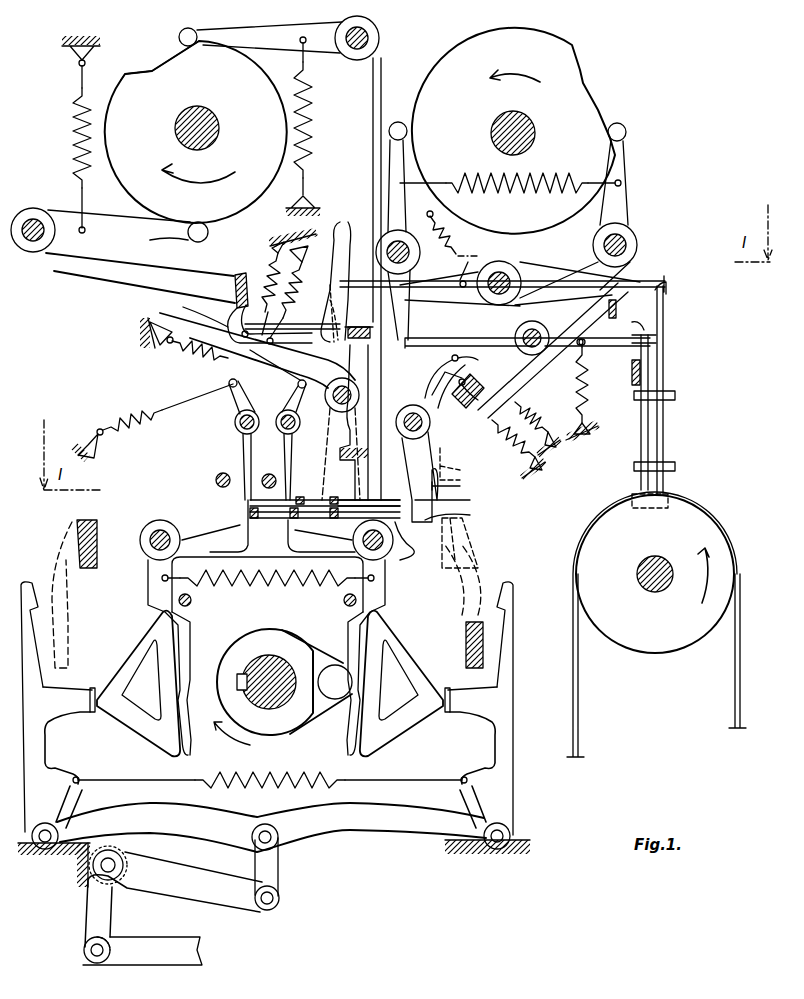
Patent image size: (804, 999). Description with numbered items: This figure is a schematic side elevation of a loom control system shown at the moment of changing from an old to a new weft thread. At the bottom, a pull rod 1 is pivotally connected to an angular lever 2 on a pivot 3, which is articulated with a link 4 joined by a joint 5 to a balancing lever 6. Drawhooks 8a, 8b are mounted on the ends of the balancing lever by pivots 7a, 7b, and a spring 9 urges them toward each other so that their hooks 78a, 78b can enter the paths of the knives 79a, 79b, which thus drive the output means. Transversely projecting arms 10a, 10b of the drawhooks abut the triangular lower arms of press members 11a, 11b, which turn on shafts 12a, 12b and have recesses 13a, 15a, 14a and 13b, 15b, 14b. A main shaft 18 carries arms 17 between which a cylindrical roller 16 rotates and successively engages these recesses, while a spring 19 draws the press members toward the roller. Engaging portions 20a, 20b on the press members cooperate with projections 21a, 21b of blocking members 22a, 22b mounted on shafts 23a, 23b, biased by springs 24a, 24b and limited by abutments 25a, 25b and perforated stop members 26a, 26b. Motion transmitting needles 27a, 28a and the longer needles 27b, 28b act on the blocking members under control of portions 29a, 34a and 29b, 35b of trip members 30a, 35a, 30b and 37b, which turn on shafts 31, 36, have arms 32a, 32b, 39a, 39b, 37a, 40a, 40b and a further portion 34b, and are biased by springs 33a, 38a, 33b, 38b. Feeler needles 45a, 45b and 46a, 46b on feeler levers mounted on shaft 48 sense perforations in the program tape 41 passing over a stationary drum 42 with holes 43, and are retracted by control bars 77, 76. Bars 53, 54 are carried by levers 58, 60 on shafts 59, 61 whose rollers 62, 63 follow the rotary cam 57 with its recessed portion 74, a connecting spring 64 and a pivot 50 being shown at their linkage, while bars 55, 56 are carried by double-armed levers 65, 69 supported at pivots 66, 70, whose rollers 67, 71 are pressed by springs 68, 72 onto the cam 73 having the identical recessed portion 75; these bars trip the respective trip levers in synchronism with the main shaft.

The pull rod 1 is at (172, 961).
The angular lever 2 is at (180, 895).
The pivot 3 is at (120, 858).
The link 4 is at (270, 875).
The joint 5 is at (252, 848).
The balancing lever 6 is at (346, 829).
The pivot 7a is at (506, 832).
The pivot 7b is at (60, 820).
The drawhook 8a is at (502, 762).
The drawhook 8b is at (48, 740).
The spring 9 is at (254, 778).
The transversely projecting arm 10a is at (482, 708).
The transversely projecting arm 10b is at (78, 705).
The press member 11a is at (395, 708).
The press member 11b is at (130, 715).
The shaft 12a is at (380, 558).
The shaft 12b is at (150, 550).
The recess 13a is at (354, 645).
The recess 13b is at (183, 640).
The recess 14a is at (352, 726).
The recess 14b is at (182, 720).
The recess 15a is at (351, 697).
The recess 15b is at (186, 678).
The cylindrical roller 16 is at (345, 691).
The arms 17 is at (284, 725).
The main shaft 18 is at (280, 693).
The spring 19 is at (268, 584).
The engaging portion 20a is at (288, 540).
The engaging portion 20b is at (248, 526).
The projection 21a is at (296, 520).
The projection 21b is at (250, 514).
The blocking member 22a is at (296, 388).
The blocking member 22b is at (233, 390).
The shaft 23a is at (300, 420).
The shaft 23b is at (236, 426).
The spring 24a is at (194, 354).
The spring 24b is at (151, 423).
The abutment 25a is at (266, 468).
The abutment 25b is at (218, 469).
The perforated stop member 26a is at (292, 470).
The perforated stop member 26b is at (243, 470).
The first motion transmitting needle 27a is at (408, 540).
The motion transmitting needle 27b is at (250, 510).
The second motion transmitting needle 28a is at (318, 500).
The motion transmitting needle 28b is at (250, 500).
The portion of first trip member 29a is at (472, 508).
The lower portion of trip member 29b is at (470, 515).
The first trip member 30a is at (462, 488).
The trip member 30b is at (462, 468).
The shaft 31 is at (430, 430).
The arm of trip lever 32a is at (470, 385).
The lever 32b is at (480, 372).
The spring 33a is at (520, 470).
The spring 33b is at (556, 448).
The portion of second trip member 34a is at (356, 456).
The slider bar 34b is at (358, 500).
The second trip member 35a is at (228, 288).
The trip member 35b is at (242, 331).
The shaft 36 is at (357, 402).
The arm of trip member 37a is at (284, 342).
The trip member arm 37b is at (180, 318).
The spring 38a is at (280, 258).
The spring 38b is at (268, 280).
The arm of trip member 39a is at (500, 338).
The lever 39b is at (430, 338).
The arm portion 40a is at (332, 285).
The arm portion 40b is at (322, 260).
The program tape 41 is at (579, 722).
The stationary drum 42 is at (664, 634).
The perforations 43 is at (672, 498).
The feeler needle 45a is at (660, 440).
The feeler needle 45b is at (668, 455).
The feeler needle 46a is at (668, 378).
The feeler needle 46b is at (670, 394).
The shaft 48 is at (608, 310).
The pivot 50 is at (512, 274).
The bar 53 is at (466, 410).
The bar 54 is at (450, 550).
The bar 55 is at (359, 342).
The bar 56 is at (145, 286).
The rotary cam 57 is at (460, 116).
The lever 58 is at (624, 209).
The shaft 59 is at (628, 236).
The lever 60 is at (408, 213).
The shaft 61 is at (412, 258).
The follower roller 62 is at (626, 130).
The follower roller 63 is at (398, 122).
The spring 64 is at (548, 192).
The double-armed angular lever 65 is at (390, 62).
The pivot 66 is at (368, 30).
The cam follower roller 67 is at (190, 30).
The spring 68 is at (302, 180).
The double-armed angular lever 69 is at (134, 254).
The pivot 70 is at (34, 250).
The cam follower roller 71 is at (198, 242).
The spring 72 is at (74, 148).
The rotary cam 73 is at (248, 104).
The recessed portion 74 is at (593, 100).
The recessed portion 75 is at (156, 60).
The second control bar 76 is at (660, 292).
The first control bar 77 is at (642, 372).
The hook 78a is at (510, 600).
The hook 78b is at (30, 600).
The knife 79a is at (466, 642).
The knife 79b is at (78, 526).